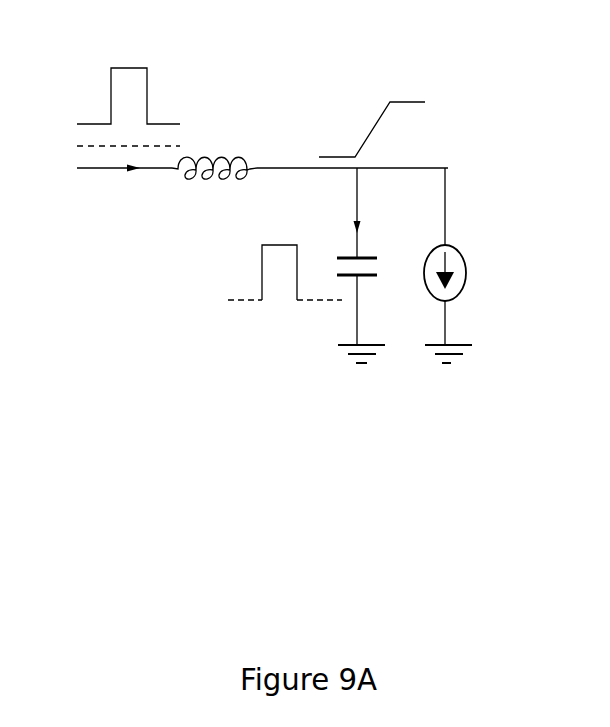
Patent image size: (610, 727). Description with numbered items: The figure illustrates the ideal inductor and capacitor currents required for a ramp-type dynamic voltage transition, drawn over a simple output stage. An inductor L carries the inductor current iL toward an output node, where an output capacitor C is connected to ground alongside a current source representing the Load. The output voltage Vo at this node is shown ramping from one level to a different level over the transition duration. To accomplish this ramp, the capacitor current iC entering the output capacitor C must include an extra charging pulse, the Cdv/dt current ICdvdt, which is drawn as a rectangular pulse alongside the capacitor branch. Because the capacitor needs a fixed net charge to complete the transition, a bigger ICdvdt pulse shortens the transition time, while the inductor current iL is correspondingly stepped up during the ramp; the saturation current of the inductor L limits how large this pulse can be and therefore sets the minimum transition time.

The inductor L is at (214, 153).
The output capacitor C is at (361, 310).
The load Load is at (473, 265).
The inductor current iL is at (128, 107).
The output voltage Vo is at (372, 129).
The capacitor current iC is at (343, 213).
The Cdv/dt current ICdvdt is at (285, 256).